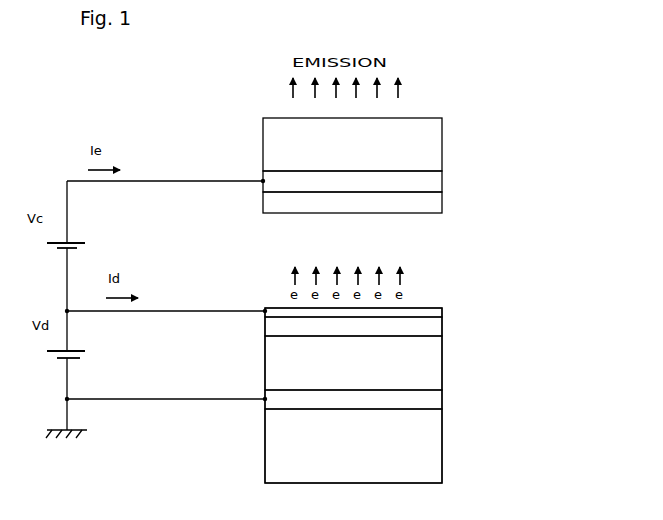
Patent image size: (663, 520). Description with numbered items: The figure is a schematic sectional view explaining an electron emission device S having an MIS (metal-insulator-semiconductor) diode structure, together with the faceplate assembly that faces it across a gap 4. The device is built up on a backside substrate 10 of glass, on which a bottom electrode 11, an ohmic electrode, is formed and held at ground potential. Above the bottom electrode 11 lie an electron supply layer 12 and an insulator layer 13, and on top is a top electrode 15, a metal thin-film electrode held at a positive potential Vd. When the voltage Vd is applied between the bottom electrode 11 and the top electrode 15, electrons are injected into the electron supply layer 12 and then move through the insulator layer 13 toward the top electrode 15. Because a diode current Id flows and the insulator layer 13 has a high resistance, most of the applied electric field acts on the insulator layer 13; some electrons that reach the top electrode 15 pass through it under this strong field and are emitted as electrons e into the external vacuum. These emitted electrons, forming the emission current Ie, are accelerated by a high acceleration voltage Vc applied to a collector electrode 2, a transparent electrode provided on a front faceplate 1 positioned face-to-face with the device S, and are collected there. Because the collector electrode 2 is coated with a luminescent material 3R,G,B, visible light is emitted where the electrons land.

The front faceplate 1 is at (429, 140).
The collector electrode 2 is at (263, 181).
The luminescent material 3R,G,B is at (429, 205).
The vacuum gap 4 is at (361, 250).
The electron emission element S is at (457, 300).
The top electrode 15 is at (265, 310).
The insulator layer 13 is at (440, 330).
The electron supply layer 12 is at (268, 378).
The bottom electrode 11 is at (265, 399).
The backside substrate 10 is at (265, 458).